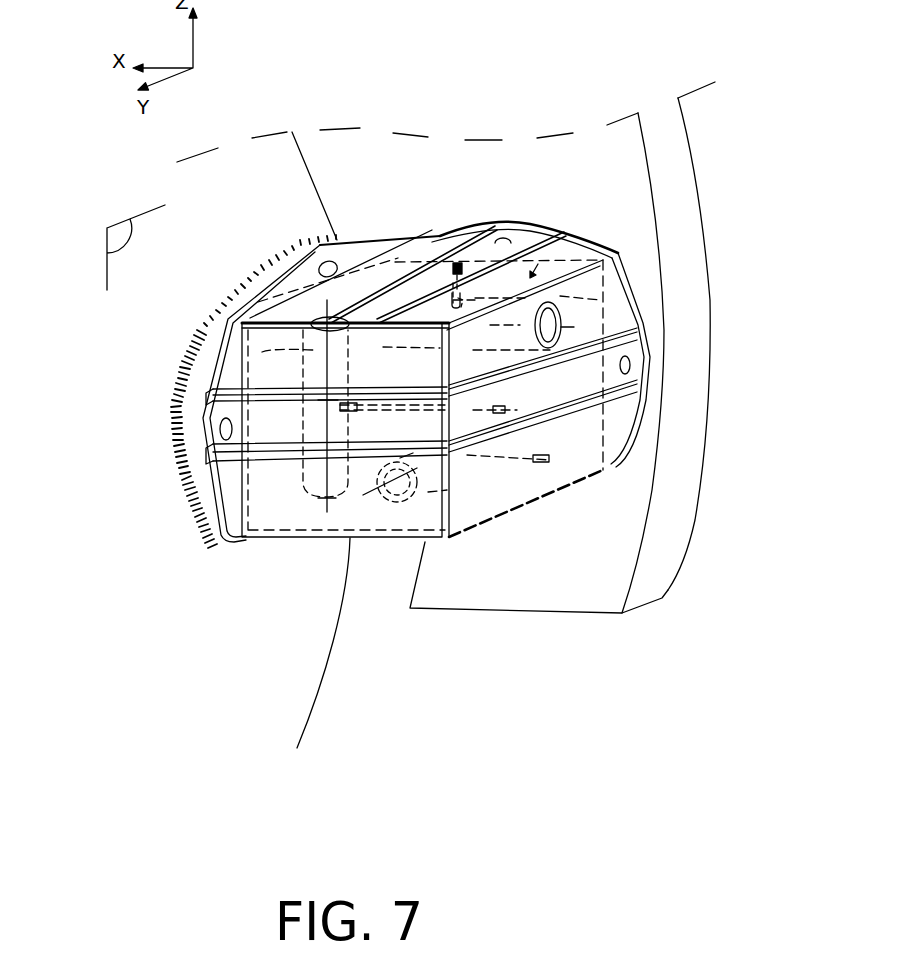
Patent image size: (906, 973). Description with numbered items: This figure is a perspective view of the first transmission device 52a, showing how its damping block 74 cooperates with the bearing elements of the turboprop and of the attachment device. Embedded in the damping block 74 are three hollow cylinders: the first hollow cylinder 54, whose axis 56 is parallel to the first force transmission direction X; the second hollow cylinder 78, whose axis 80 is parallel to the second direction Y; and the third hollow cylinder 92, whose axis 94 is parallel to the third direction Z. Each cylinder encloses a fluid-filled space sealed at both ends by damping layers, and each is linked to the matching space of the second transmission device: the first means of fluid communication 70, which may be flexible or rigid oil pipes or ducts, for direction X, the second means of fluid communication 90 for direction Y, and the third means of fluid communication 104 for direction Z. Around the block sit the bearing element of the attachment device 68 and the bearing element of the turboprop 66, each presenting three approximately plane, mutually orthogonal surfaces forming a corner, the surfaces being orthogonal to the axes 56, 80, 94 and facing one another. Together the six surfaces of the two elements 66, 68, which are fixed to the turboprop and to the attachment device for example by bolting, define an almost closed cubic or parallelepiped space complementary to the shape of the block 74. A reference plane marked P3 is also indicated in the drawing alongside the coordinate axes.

The first transmission device 52a is at (565, 182).
The first hollow cylinder 54 is at (458, 264).
The axis 56 is at (577, 325).
The bearing element of the turboprop 66 is at (280, 550).
The bearing element of the attachment device 68 is at (497, 224).
The first means of fluid communication 70 is at (418, 245).
The damping block 74 is at (585, 238).
The second hollow cylinder 78 is at (490, 520).
The axis 80 is at (372, 493).
The second means of fluid communication 90 is at (540, 494).
The third hollow cylinder 92 is at (212, 360).
The axis 94 is at (296, 306).
The third means of fluid communication 104 is at (507, 407).
The plane P3 is at (118, 225).